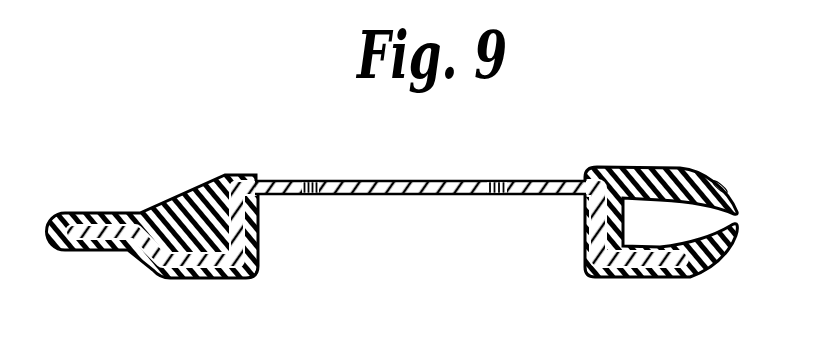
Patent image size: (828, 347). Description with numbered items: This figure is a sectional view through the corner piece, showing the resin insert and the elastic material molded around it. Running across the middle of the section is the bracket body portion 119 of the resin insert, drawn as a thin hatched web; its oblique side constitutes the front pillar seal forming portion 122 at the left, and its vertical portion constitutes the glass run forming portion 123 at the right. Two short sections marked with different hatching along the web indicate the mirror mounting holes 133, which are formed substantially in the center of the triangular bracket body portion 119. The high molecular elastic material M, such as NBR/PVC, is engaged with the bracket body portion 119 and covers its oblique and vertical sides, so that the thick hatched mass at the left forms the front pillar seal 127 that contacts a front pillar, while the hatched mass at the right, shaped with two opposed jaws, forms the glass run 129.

The high molecular elastic material M is at (203, 193).
The bracket body portion 119 is at (405, 183).
The front pillar seal forming portion 122 is at (102, 233).
The glass run forming portion 123 is at (647, 261).
The front pillar seal 127 is at (119, 213).
The glass run 129 is at (692, 172).
The mirror mounting holes 133 is at (318, 185).